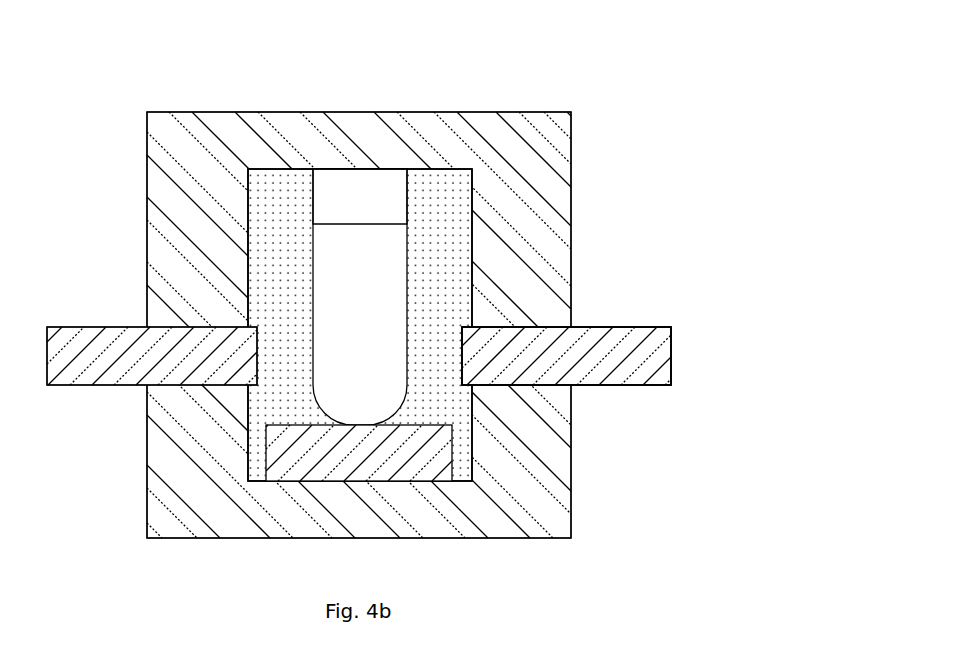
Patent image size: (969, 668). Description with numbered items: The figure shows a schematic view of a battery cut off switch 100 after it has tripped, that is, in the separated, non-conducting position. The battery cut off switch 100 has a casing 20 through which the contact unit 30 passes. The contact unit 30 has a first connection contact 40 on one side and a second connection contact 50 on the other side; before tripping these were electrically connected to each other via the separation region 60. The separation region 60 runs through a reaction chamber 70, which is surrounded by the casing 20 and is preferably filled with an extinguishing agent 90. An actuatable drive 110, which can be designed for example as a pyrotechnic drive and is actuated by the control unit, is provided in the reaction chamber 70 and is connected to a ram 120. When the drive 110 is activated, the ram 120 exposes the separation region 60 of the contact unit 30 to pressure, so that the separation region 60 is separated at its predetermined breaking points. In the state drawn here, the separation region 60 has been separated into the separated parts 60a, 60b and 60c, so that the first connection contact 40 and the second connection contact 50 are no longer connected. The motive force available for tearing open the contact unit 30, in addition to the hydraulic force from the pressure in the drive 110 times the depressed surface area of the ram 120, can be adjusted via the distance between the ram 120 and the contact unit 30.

The battery cut off switch 100 is at (558, 95).
The casing 20 is at (359, 325).
The contact unit 30 is at (618, 313).
The first connection contact 40 is at (583, 356).
The second connection contact 50 is at (137, 356).
The separation region 60 is at (566, 356).
The separated part 60a is at (152, 356).
The separated part 60b is at (566, 356).
The separated part 60c is at (359, 453).
The reaction chamber 70 is at (437, 226).
The extinguishing agent 90 is at (360, 325).
The actuatable drive 110 is at (360, 196).
The ram 120 is at (360, 297).